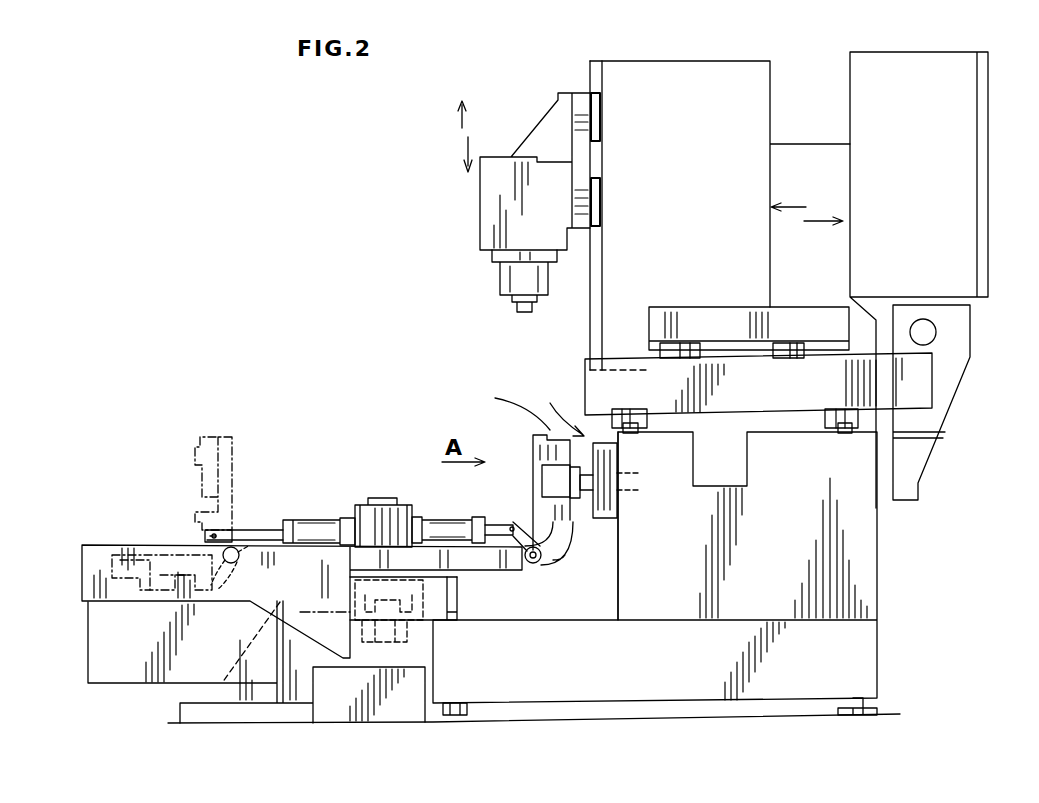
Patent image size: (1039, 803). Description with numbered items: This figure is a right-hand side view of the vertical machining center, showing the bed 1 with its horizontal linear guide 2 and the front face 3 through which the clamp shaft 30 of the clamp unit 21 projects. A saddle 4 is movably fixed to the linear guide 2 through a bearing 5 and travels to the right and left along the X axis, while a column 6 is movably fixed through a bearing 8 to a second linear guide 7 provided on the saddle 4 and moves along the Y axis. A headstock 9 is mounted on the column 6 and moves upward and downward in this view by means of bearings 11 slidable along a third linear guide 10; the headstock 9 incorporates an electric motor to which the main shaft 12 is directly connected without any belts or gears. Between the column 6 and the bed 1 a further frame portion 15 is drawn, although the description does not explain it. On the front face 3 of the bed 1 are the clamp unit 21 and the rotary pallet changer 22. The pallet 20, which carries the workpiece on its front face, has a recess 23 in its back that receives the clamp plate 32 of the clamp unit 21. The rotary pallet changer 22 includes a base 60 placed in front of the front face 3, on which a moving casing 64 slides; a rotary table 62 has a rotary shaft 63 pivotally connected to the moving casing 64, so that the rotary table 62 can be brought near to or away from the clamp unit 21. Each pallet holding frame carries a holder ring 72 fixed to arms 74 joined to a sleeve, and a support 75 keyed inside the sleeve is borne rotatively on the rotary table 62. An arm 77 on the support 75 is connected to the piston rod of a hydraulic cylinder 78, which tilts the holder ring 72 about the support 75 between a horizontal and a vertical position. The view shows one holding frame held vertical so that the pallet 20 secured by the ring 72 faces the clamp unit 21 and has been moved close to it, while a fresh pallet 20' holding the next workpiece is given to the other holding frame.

The bed 1 is at (862, 573).
The linear guide 2 is at (840, 434).
The front face 3 is at (617, 567).
The saddle 4 is at (597, 392).
The bearing 5 is at (835, 408).
The column 6 is at (757, 121).
The second linear guide 7 is at (628, 356).
The bearing 8 is at (800, 345).
The headstock 9 is at (493, 211).
The third linear guide 10 is at (598, 293).
The bearings 11 is at (619, 193).
The main shaft 12 is at (518, 311).
The frame column 15 is at (965, 195).
The pallet 20 is at (529, 485).
The fresh pallet 20' is at (169, 490).
The clamp unit 21 is at (558, 408).
The rotary pallet changer 22 is at (317, 456).
The recess 23 is at (543, 477).
The shaft 30 is at (633, 487).
The clamp plate 32 is at (580, 500).
The base 60 is at (223, 695).
The rotary table 62 is at (480, 566).
The rotary shaft 63 is at (378, 500).
The moving casing 64 is at (425, 598).
The holder ring 72 is at (550, 430).
The arms 74 is at (227, 602).
The support 75 is at (530, 568).
The arm 77 is at (205, 540).
The hydraulic cylinder 78 is at (307, 525).